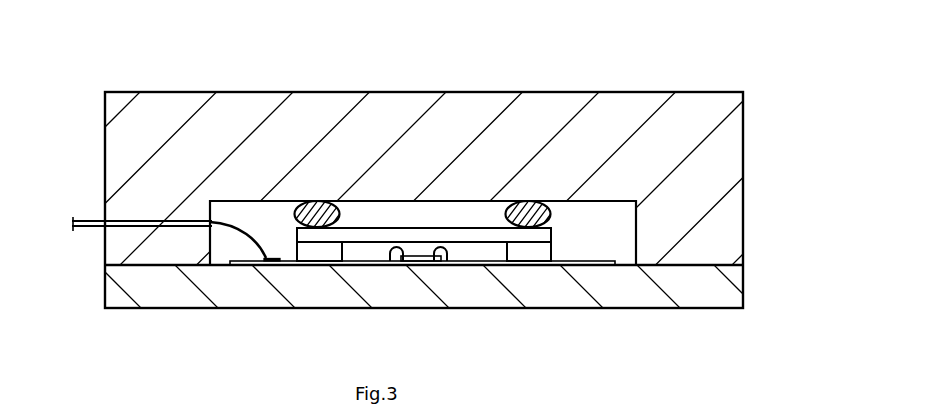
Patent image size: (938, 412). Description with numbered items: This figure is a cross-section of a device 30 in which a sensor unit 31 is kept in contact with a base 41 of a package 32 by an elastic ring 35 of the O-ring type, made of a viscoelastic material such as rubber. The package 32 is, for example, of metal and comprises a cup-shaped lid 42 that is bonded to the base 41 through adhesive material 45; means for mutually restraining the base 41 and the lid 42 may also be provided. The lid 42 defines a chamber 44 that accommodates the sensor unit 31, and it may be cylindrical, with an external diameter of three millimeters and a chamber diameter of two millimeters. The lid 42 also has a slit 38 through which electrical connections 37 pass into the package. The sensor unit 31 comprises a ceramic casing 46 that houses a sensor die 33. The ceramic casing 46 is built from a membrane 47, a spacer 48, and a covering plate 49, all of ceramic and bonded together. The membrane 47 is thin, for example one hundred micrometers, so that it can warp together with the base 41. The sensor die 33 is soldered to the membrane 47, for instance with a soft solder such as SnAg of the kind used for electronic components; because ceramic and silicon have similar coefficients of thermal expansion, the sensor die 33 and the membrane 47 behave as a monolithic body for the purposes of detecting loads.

The device 30 is at (714, 68).
The sensor unit 31 is at (563, 234).
The package 32 is at (747, 171).
The sensor die 33 is at (422, 258).
The elastic ring 35 is at (520, 201).
The electrical connections 37 is at (82, 219).
The slit 38 is at (100, 219).
The base 41 is at (702, 300).
The cup-shaped lid 42 is at (233, 105).
The chamber 44 is at (629, 231).
The adhesive material 45 is at (103, 264).
The ceramic casing 46 is at (554, 248).
The membrane 47 is at (499, 263).
The spacer 48 is at (310, 250).
The covering plate 49 is at (367, 234).